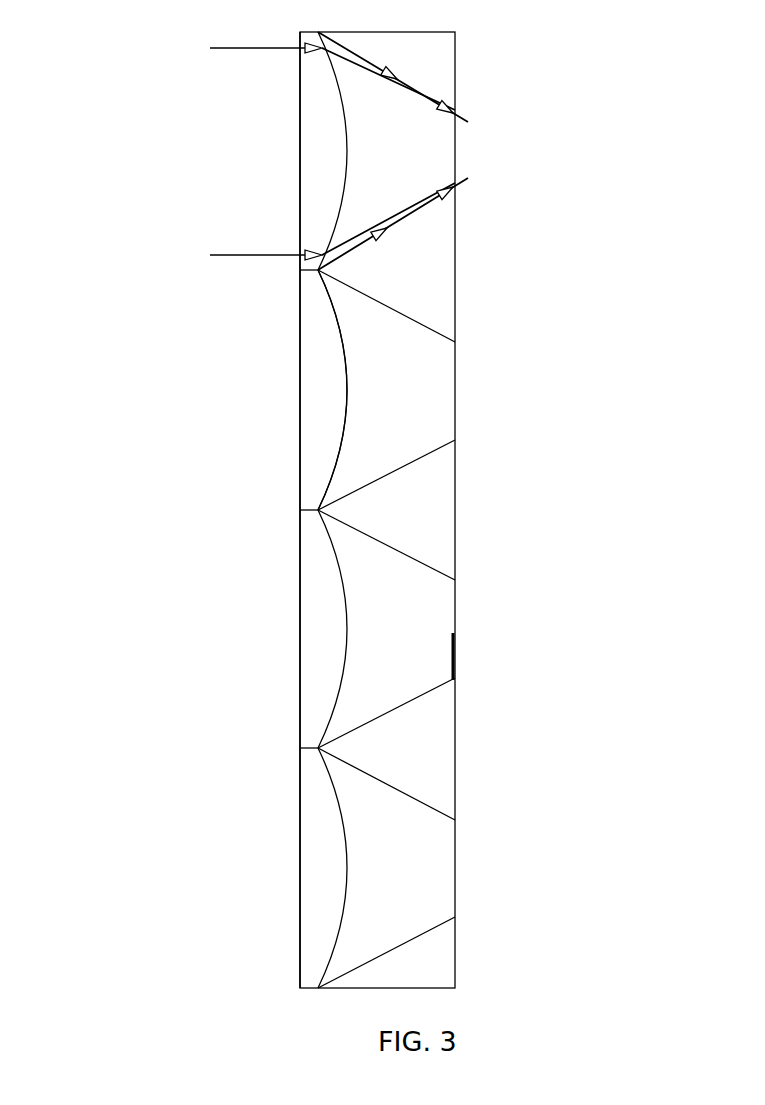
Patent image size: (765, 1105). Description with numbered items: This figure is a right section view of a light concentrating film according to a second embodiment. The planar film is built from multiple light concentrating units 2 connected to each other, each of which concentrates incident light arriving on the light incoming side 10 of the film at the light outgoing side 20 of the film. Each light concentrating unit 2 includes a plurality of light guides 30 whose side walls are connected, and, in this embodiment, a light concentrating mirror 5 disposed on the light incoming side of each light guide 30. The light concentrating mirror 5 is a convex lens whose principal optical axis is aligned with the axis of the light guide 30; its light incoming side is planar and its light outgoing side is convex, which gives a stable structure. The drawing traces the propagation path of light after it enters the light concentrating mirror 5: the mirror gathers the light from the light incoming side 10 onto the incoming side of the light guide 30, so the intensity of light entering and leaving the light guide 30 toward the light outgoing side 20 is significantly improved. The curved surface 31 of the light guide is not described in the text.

The light concentrating unit 2 is at (170, 67).
The light concentrating mirror 5 is at (300, 194).
The light incoming side 10 is at (130, 153).
The light outgoing side 20 is at (545, 224).
The light guide 30 is at (377, 137).
The curved surface of lens portion 31 is at (347, 390).